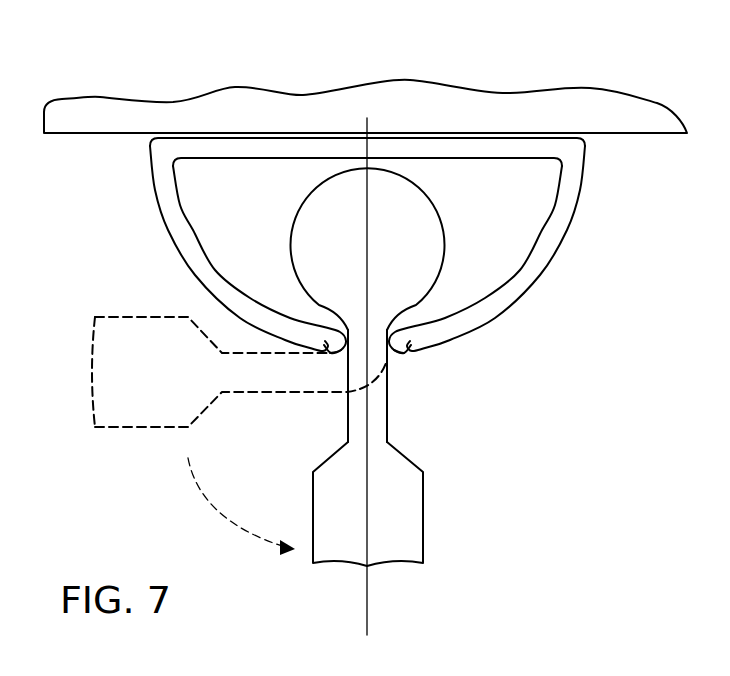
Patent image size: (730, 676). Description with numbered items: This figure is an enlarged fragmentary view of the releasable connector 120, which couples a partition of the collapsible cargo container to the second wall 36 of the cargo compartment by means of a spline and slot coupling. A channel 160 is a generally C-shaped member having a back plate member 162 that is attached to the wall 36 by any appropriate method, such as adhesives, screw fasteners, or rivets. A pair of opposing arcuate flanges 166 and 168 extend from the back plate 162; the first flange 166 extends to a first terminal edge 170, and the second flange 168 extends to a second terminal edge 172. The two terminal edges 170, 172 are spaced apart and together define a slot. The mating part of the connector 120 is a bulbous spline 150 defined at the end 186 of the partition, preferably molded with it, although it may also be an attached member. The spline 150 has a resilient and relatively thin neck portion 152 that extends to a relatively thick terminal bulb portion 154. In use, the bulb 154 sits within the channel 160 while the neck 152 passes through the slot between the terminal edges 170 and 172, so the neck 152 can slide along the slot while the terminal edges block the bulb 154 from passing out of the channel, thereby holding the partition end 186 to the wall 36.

The second wall 36 is at (650, 140).
The releasable connector 120 is at (584, 375).
The bulbous spline 150 is at (410, 392).
The neck portion 152 is at (350, 424).
The terminal bulb portion 154 is at (393, 188).
The channel 160 is at (86, 190).
The back plate member 162 is at (443, 150).
The first flange 166 is at (212, 270).
The second flange 168 is at (550, 244).
The first terminal edge 170 is at (325, 348).
The second terminal edge 172 is at (398, 346).
The end 186 is at (410, 438).